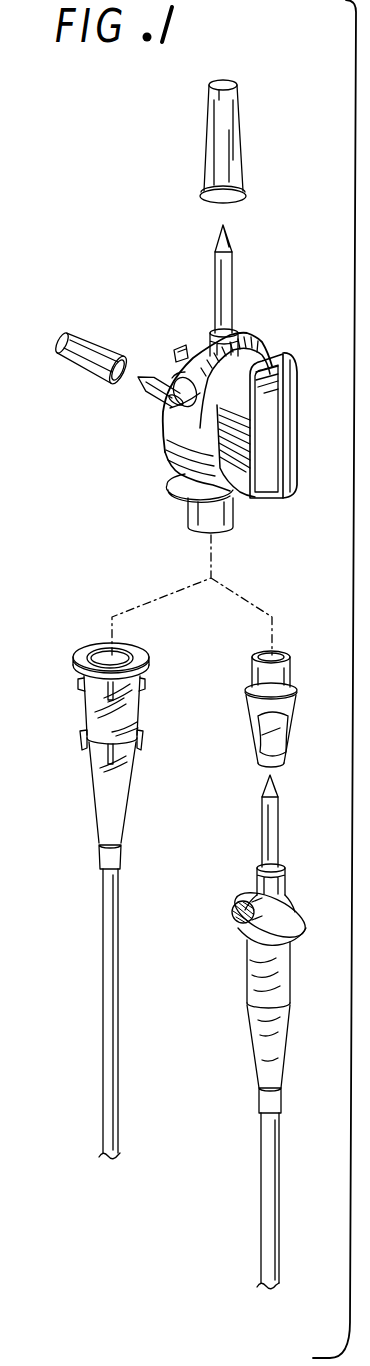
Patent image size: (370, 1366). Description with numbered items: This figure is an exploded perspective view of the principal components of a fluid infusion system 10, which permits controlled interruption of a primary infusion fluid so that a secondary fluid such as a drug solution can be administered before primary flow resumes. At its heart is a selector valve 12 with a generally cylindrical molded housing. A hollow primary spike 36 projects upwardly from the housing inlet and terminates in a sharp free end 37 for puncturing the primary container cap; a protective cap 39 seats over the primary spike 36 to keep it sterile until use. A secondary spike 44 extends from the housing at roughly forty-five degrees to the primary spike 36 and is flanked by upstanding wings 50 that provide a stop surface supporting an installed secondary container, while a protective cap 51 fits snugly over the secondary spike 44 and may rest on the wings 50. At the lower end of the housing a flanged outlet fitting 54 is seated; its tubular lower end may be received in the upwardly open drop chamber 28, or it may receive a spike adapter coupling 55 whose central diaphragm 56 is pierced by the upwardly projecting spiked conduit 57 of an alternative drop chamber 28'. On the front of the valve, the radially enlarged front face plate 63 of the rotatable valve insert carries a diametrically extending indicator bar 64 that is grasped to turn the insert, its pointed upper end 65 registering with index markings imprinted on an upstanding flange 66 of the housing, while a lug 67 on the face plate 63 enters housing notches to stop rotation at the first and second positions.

The fluid infusion system 10 is at (159, 1156).
The selector valve 12 is at (194, 419).
The drop chamber 28 is at (126, 901).
The alternative drop chamber 28' is at (253, 1076).
The primary spike 36 is at (232, 287).
The sharp free end 37 is at (228, 233).
The protective cap 39 is at (237, 141).
The secondary spike 44 is at (158, 393).
The upstanding wings 50 is at (178, 375).
The protective cap 51 is at (68, 334).
The flanged outlet fitting 54 is at (188, 513).
The spike adapter coupling 55 is at (290, 673).
The central diaphragm 56 is at (290, 727).
The spiked conduit 57 is at (278, 824).
The front face plate 63 is at (243, 484).
The indicator bar 64 is at (288, 484).
The pointed upper end 65 is at (275, 352).
The upstanding flange 66 is at (196, 352).
The lug 67 is at (294, 368).